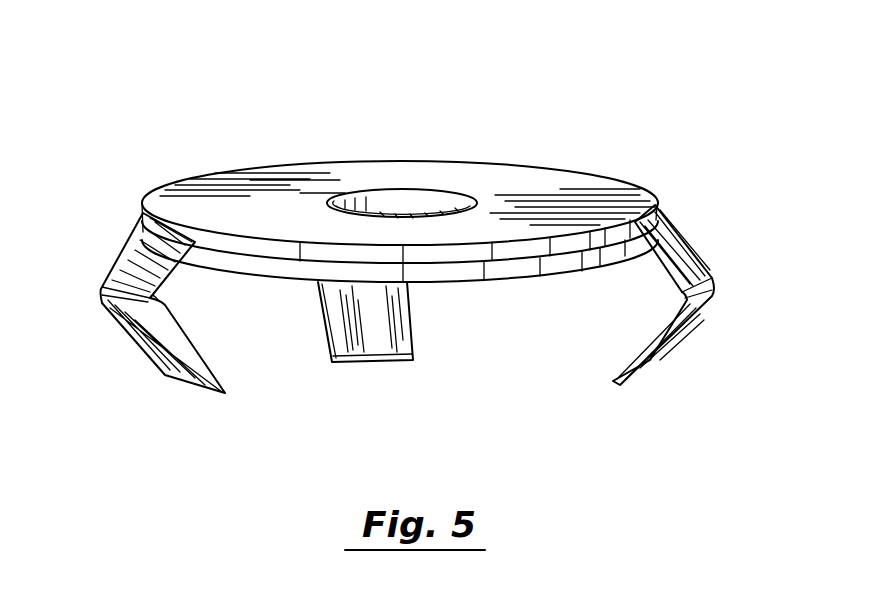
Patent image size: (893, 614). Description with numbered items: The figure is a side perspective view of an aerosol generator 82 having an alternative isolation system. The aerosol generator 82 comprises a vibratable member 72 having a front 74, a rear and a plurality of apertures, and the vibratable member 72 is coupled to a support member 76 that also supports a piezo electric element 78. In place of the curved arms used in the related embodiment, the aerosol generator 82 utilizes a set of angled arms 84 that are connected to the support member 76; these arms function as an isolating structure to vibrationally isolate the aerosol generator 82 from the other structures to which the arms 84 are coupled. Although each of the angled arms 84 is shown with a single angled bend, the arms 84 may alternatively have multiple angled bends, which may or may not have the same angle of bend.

The vibratable member 72 is at (380, 207).
The front 74 is at (418, 207).
The support member 76 is at (593, 193).
The piezo electric element 78 is at (512, 279).
The aerosol generator 82 is at (427, 174).
The angled arms 84 is at (140, 270).